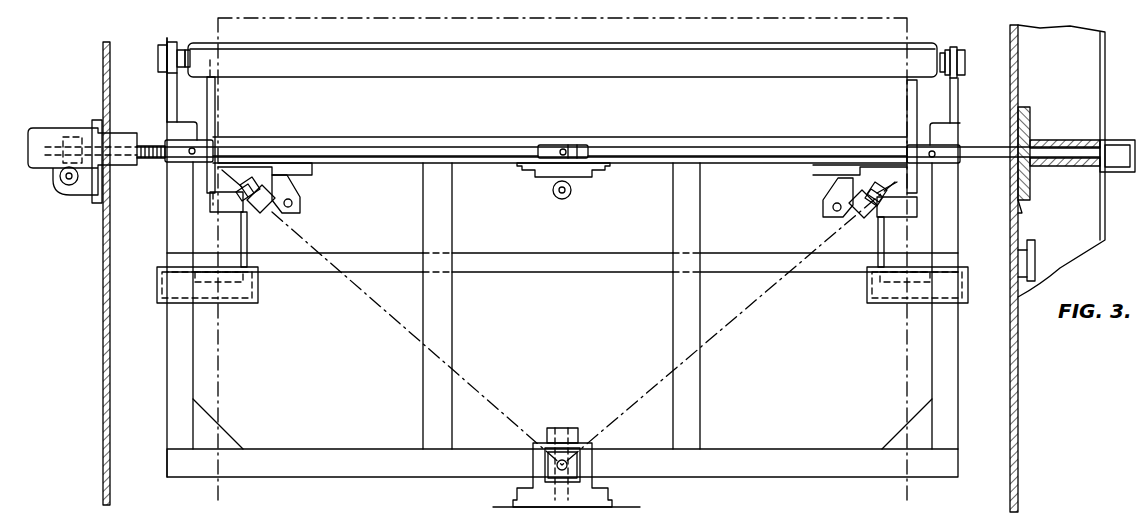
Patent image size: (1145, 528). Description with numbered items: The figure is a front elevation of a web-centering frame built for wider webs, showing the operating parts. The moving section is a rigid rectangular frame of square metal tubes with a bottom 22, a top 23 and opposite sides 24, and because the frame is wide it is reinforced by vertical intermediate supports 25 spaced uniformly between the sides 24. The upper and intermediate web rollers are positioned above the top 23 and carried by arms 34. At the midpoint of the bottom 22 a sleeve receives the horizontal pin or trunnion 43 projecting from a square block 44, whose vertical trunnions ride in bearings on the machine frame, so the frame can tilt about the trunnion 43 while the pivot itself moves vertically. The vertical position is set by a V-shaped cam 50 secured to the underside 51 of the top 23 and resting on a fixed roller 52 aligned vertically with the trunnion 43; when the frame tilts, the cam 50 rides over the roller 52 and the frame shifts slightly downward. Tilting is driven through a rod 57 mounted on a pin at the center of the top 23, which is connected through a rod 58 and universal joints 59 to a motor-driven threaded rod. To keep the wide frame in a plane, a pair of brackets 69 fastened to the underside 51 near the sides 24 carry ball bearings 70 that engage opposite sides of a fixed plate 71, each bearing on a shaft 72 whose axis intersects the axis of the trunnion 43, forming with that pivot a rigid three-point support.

The bottom 22 is at (338, 462).
The top 23 is at (393, 165).
The sides 24 is at (168, 345).
The vertical intermediate supports 25 is at (445, 340).
The arms 34 is at (167, 88).
The pin or trunnion 43 is at (558, 472).
The square block 44 is at (570, 455).
The V-shaped cam 50 is at (583, 178).
The underside 51 is at (651, 165).
The fixed roller 52 is at (556, 198).
The rod 57 is at (570, 146).
The rod 58 is at (392, 139).
The universal joints 59 is at (173, 148).
The brackets 69 is at (312, 170).
The ball bearings 70 is at (242, 212).
The plate 71 is at (284, 184).
The shaft 72 is at (270, 210).